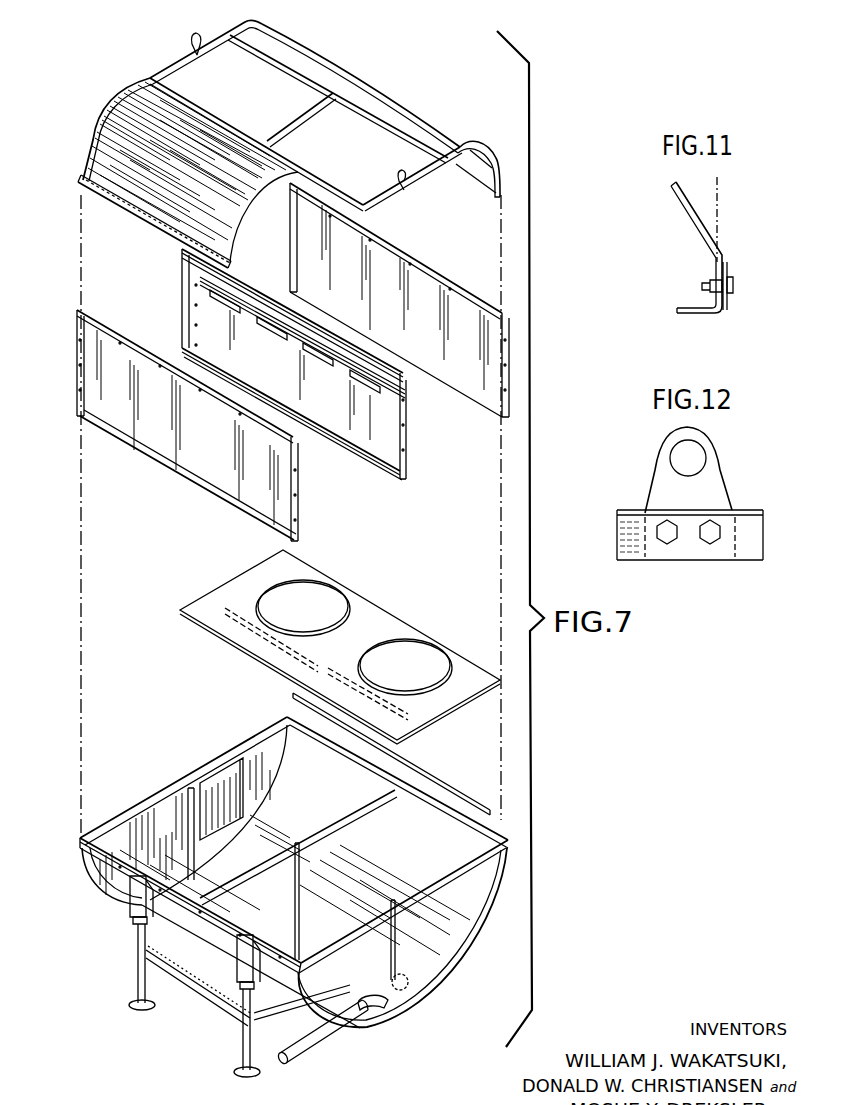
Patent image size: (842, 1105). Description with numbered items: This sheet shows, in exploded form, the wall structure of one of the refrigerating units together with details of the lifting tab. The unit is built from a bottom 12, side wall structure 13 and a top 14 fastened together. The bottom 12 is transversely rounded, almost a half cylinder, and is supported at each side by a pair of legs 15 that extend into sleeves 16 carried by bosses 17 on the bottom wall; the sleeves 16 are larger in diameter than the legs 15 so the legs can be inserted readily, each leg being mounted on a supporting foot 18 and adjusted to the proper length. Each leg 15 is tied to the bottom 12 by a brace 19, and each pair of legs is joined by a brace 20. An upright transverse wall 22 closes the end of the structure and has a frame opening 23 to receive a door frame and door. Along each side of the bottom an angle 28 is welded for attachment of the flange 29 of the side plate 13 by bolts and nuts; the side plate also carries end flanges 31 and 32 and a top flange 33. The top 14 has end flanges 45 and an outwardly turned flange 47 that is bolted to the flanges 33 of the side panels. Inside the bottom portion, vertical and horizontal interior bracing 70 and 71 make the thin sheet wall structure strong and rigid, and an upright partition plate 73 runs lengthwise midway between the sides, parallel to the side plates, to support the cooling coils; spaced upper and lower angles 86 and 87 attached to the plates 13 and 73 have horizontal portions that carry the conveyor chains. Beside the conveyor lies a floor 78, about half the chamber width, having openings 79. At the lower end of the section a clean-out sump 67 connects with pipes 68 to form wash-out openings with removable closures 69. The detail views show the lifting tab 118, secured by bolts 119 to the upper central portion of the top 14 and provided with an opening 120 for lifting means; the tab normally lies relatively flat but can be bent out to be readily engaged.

In FIG. 7, the bottom 12 is at (441, 975).
In FIG. 7, the side wall structure 13 is at (279, 362).
In FIG. 7, the top 14 is at (289, 139).
In FIG. 7, the legs 15 is at (136, 942).
In FIG. 7, the sleeves 16 is at (134, 919).
In FIG. 7, the bosses 17 is at (130, 900).
In FIG. 7, the supporting foot 18 is at (129, 1006).
In FIG. 7, the brace 19 is at (170, 953).
In FIG. 7, the brace 20 is at (181, 986).
In FIG. 7, the upright transverse walls 22 is at (271, 894).
In FIG. 7, the frame opening 23 is at (243, 793).
In FIG. 7, the angle 28 is at (81, 846).
In FIG. 7, the flange 29 is at (167, 468).
In FIG. 7, the end flange 31 is at (507, 322).
In FIG. 7, the end flange 32 is at (77, 372).
In FIG. 7, the top flange 33 is at (430, 266).
In FIG. 7, the end flanges 45 is at (139, 78).
In FIG. 11, the end flanges 45 is at (728, 268).
In FIG. 12, the end flanges 45 is at (628, 513).
In FIG. 7, the outwardly turned flange 47 is at (128, 213).
In FIG. 7, the clean-out sump 67 is at (375, 1010).
In FIG. 7, the pipes 68 is at (320, 1045).
In FIG. 7, the removable closures 69 is at (284, 1064).
In FIG. 7, the vertical interior bracing 70 is at (195, 816).
In FIG. 7, the horizontal interior bracing 71 is at (168, 796).
In FIG. 7, the upright partition plates 73 is at (294, 396).
In FIG. 7, the floor 78 is at (340, 647).
In FIG. 7, the openings 79 is at (380, 650).
In FIG. 7, the upper angles 86 is at (293, 338).
In FIG. 7, the lower angles 87 is at (366, 466).
In FIG. 7, the lifting tab 118 is at (196, 36).
In FIG. 11, the lifting tab 118 is at (692, 214).
In FIG. 12, the lifting tab 118 is at (716, 482).
In FIG. 11, the bolts 119 is at (734, 289).
In FIG. 12, the bolts 119 is at (702, 524).
In FIG. 12, the opening 120 is at (677, 452).